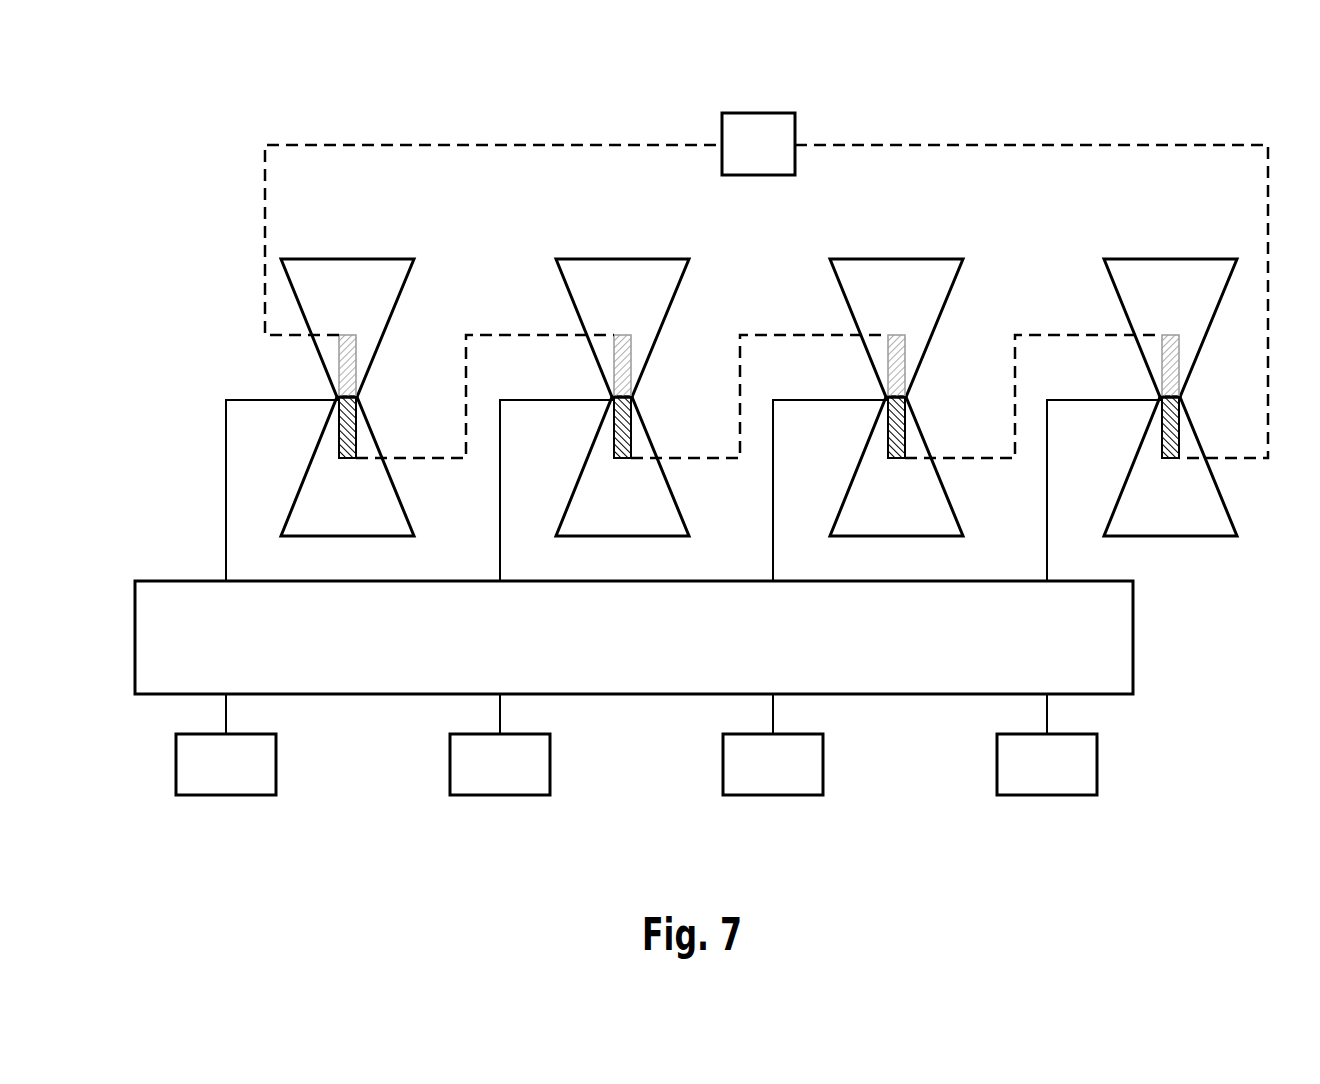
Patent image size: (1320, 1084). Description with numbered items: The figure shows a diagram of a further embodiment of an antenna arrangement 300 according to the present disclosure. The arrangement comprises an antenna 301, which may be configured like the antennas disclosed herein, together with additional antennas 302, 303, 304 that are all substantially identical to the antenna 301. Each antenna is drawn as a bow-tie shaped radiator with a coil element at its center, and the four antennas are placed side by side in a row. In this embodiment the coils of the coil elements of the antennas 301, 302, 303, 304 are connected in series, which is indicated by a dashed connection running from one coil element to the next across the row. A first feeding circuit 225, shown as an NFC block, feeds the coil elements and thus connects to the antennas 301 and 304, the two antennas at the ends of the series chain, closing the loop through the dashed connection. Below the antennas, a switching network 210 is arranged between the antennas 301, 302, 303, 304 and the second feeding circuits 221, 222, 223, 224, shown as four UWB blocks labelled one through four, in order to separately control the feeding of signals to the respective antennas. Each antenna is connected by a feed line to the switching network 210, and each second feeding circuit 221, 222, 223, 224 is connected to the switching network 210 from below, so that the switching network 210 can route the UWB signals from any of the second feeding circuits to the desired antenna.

The antenna arrangement 300 is at (1220, 112).
The antenna 301 is at (347, 348).
The additional antenna 302 is at (622, 348).
The additional antenna 303 is at (896, 348).
The additional antenna 304 is at (1170, 348).
The first feeding circuit 225 is at (758, 113).
The switching network 210 is at (1133, 636).
The second feeding circuit 221 is at (226, 795).
The second feeding circuit 222 is at (500, 795).
The second feeding circuit 223 is at (773, 795).
The second feeding circuit 224 is at (1047, 795).